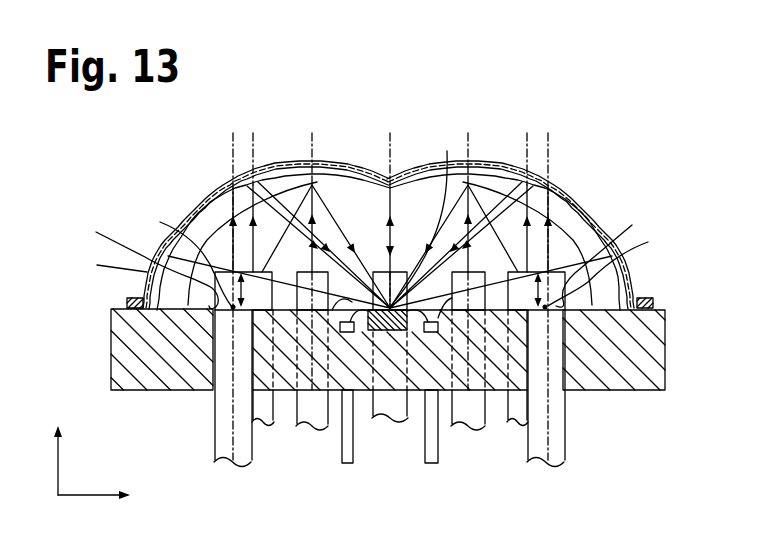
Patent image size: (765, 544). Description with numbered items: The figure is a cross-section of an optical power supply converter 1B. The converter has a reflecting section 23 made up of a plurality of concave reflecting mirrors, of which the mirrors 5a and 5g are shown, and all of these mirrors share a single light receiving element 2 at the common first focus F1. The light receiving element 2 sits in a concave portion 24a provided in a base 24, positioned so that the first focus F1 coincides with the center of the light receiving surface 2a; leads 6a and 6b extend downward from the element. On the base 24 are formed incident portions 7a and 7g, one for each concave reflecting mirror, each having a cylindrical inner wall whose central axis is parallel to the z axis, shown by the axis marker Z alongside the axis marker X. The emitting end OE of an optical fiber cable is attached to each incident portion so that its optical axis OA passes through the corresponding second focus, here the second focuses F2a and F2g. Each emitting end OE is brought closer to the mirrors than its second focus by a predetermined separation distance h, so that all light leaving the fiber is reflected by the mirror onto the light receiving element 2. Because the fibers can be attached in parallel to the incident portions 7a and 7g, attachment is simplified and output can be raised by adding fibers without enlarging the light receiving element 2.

The optical power supply converter 1B is at (149, 182).
The light receiving element 2 is at (362, 330).
The light receiving surface 2a is at (390, 307).
The concave reflecting mirror 5g is at (208, 200).
The concave reflecting mirror 5a is at (574, 205).
The lead / electrode 6a is at (440, 458).
The lead / electrode 6b is at (354, 458).
The incident portion 7g is at (213, 308).
The incident portion 7a is at (567, 308).
The reflecting section 23 is at (107, 265).
The base 24 is at (111, 353).
The concave portion 24a is at (473, 300).
The first focus F1 is at (427, 214).
The second focus F2g is at (177, 255).
The second focus F2a is at (619, 269).
The emitting end OE is at (360, 252).
The optical axis OA is at (233, 403).
The separation distance h is at (236, 305).
The z axis Z is at (58, 462).
The x axis X is at (90, 495).